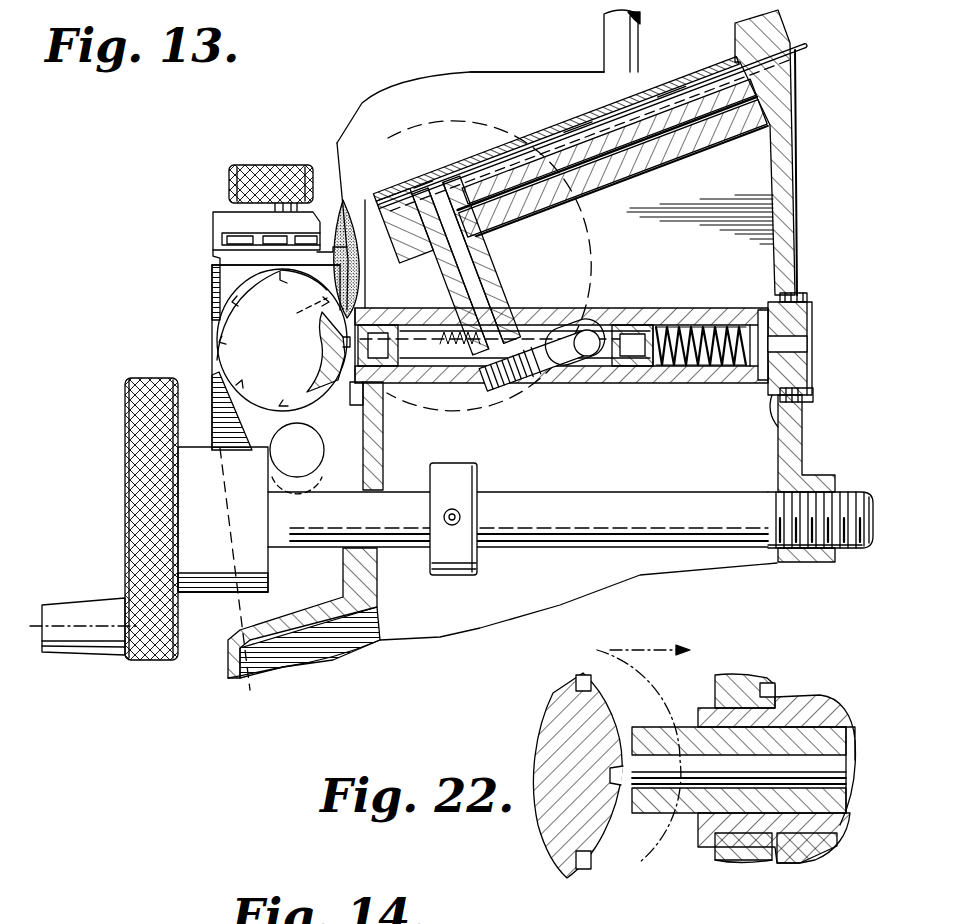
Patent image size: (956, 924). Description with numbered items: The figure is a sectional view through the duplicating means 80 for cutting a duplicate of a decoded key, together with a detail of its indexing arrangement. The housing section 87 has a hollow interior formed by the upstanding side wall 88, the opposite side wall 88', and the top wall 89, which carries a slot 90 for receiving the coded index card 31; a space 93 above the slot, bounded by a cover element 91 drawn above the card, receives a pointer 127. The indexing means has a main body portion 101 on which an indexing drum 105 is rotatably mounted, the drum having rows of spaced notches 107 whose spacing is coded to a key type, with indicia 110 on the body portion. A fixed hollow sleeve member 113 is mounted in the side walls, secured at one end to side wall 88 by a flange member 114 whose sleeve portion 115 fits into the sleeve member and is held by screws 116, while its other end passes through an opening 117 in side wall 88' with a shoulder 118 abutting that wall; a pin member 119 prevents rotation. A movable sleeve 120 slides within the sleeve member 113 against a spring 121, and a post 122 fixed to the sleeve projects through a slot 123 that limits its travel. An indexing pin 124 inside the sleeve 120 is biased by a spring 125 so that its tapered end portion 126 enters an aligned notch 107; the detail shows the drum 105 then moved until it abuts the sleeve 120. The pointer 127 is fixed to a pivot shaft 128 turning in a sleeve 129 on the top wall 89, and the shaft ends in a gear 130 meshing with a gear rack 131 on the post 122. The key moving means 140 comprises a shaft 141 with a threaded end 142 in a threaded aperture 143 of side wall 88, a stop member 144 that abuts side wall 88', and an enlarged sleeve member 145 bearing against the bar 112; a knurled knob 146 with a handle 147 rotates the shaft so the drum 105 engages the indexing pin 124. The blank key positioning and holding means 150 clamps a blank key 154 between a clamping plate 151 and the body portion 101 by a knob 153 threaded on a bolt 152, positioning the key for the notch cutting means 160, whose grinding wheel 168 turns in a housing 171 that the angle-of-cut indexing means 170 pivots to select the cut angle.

In FIG. 13, the index card 31 is at (798, 62).
In FIG. 13, the duplicating means 80 is at (812, 164).
In FIG. 13, the housing section 87 is at (700, 261).
In FIG. 13, the side wall 88 is at (797, 152).
In FIG. 13, the side wall 88' is at (358, 225).
In FIG. 22, the side wall 88' is at (743, 874).
In FIG. 13, the top wall 89 is at (657, 152).
In FIG. 13, the slot 90 is at (775, 70).
In FIG. 13, the slide rod 91 is at (647, 78).
In FIG. 13, the space 93 is at (612, 100).
In FIG. 13, the main body portion 101 is at (297, 585).
In FIG. 13, the indexing drum 105 is at (237, 362).
In FIG. 22, the indexing drum 105 is at (560, 832).
In FIG. 13, the notches 107 is at (340, 300).
In FIG. 22, the notches 107 is at (618, 762).
In FIG. 13, the indicia 110 is at (213, 322).
In FIG. 13, the bar 112 is at (297, 455).
In FIG. 13, the sleeve member 113 is at (732, 383).
In FIG. 22, the sleeve member 113 is at (800, 862).
In FIG. 13, the flange member 114 is at (807, 374).
In FIG. 13, the sleeve portion 115 is at (800, 430).
In FIG. 13, the screws 116 is at (812, 293).
In FIG. 13, the opening 117 is at (385, 385).
In FIG. 13, the shoulder 118 is at (388, 263).
In FIG. 22, the shoulder 118 is at (762, 690).
In FIG. 13, the pin member 119 is at (770, 343).
In FIG. 13, the movable sleeve 120 is at (614, 384).
In FIG. 22, the movable sleeve 120 is at (833, 732).
In FIG. 13, the spring 121 is at (686, 362).
In FIG. 13, the post 122 is at (592, 331).
In FIG. 13, the slot 123 is at (567, 315).
In FIG. 13, the indexing pin 124 is at (385, 425).
In FIG. 22, the indexing pin 124 is at (835, 795).
In FIG. 13, the spring 125 is at (454, 372).
In FIG. 13, the tapered end portion 126 is at (340, 345).
In FIG. 22, the tapered end portion 126 is at (618, 777).
In FIG. 13, the pointer 127 is at (693, 83).
In FIG. 13, the pivot shaft 128 is at (480, 247).
In FIG. 13, the sleeve 129 is at (490, 296).
In FIG. 13, the gear 130 is at (494, 383).
In FIG. 13, the gear rack 131 is at (547, 384).
In FIG. 13, the key moving means 140 is at (132, 657).
In FIG. 13, the shaft 141 is at (540, 525).
In FIG. 13, the threaded end 142 is at (850, 540).
In FIG. 13, the threaded aperture 143 is at (785, 497).
In FIG. 13, the stop member 144 is at (449, 552).
In FIG. 13, the enlarged sleeve member 145 is at (203, 570).
In FIG. 13, the knurled knob 146 is at (128, 418).
In FIG. 13, the handle 147 is at (72, 612).
In FIG. 13, the blank key positioning and holding means 150 is at (218, 180).
In FIG. 13, the clamping plate 151 is at (218, 222).
In FIG. 13, the threaded bolt 152 is at (218, 256).
In FIG. 13, the knob 153 is at (247, 165).
In FIG. 13, the blank key 154 is at (327, 232).
In FIG. 13, the notch cutting means 160 is at (518, 114).
In FIG. 13, the grinding wheel 168 is at (453, 112).
In FIG. 13, the angle-of-cut indexing means 170 is at (428, 77).
In FIG. 13, the housing 171 is at (510, 72).